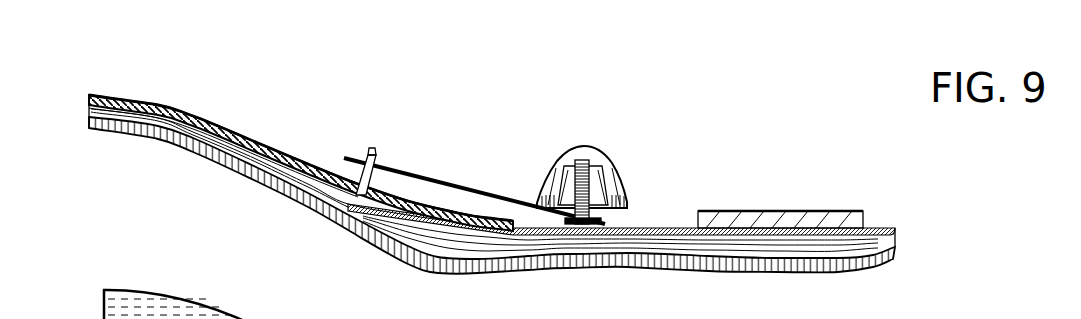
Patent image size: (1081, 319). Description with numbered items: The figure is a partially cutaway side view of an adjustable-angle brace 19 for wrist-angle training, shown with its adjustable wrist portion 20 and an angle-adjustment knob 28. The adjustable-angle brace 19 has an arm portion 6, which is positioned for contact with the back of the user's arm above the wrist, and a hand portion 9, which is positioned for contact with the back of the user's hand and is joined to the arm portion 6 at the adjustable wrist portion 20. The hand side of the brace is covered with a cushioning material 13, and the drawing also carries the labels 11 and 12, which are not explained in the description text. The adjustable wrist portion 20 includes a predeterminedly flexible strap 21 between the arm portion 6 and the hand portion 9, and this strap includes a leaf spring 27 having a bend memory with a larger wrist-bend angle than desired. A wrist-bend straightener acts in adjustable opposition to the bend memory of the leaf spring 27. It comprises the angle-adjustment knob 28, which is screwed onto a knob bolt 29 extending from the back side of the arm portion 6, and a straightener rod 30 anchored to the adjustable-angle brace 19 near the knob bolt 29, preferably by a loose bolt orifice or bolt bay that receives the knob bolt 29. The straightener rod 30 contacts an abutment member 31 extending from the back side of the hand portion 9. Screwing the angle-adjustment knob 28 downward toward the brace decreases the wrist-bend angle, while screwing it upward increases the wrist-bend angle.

The arm portion 6 is at (860, 233).
The hand portion 9 is at (184, 120).
The heel block 11 is at (788, 206).
The midsole plate 12 is at (295, 163).
The cushioning material 13 is at (643, 252).
The adjustable-angle brace 19 is at (930, 236).
The adjustable wrist portion 20 is at (513, 232).
The flexible strap 21 is at (250, 304).
The leaf spring 27 is at (244, 146).
The angle-adjustment knob 28 is at (537, 182).
The knob bolt 29 is at (572, 226).
The straightener rod 30 is at (443, 173).
The abutment member 31 is at (370, 160).